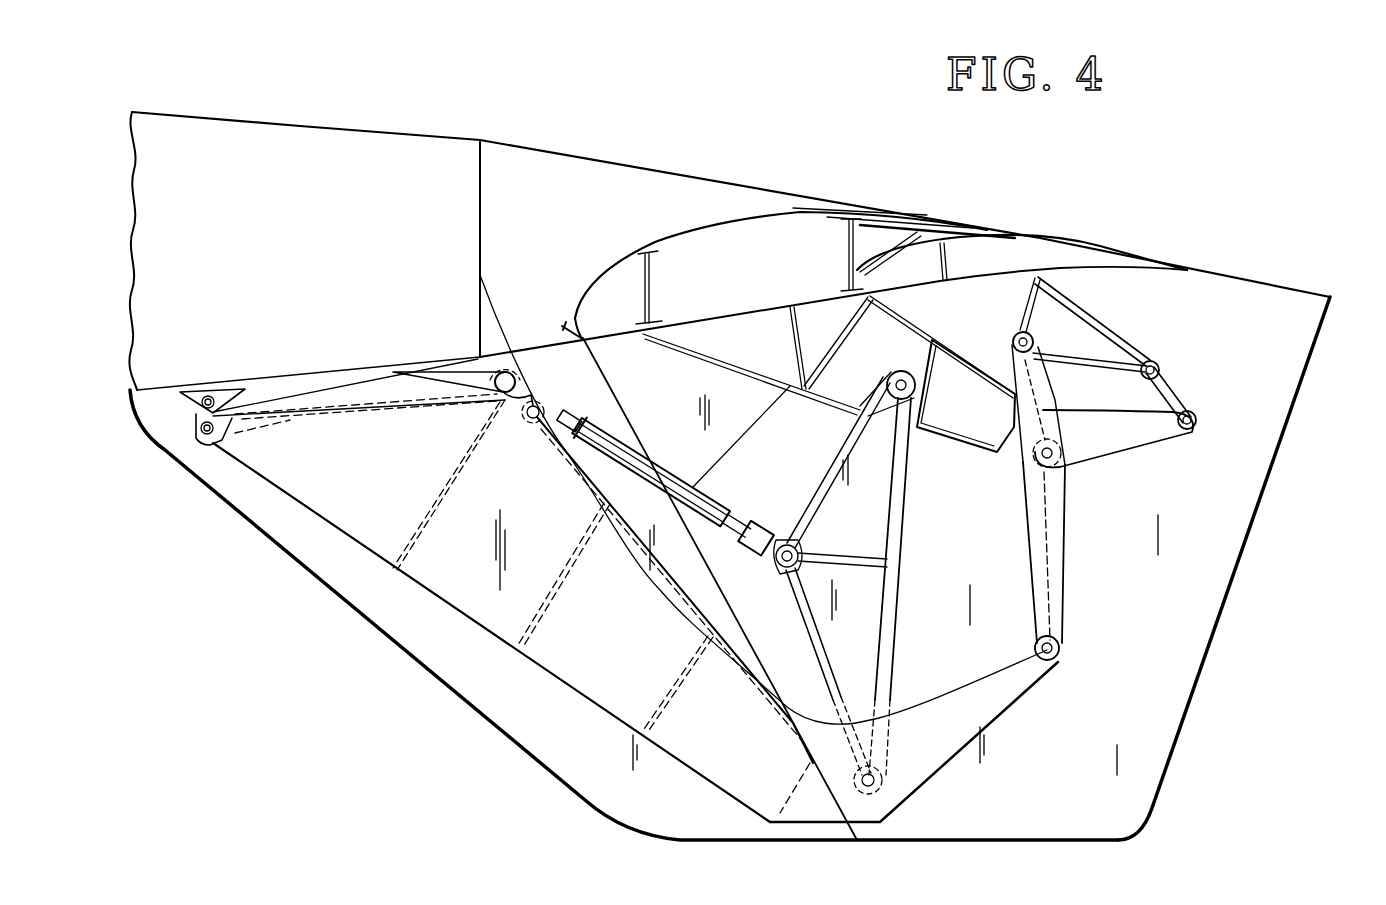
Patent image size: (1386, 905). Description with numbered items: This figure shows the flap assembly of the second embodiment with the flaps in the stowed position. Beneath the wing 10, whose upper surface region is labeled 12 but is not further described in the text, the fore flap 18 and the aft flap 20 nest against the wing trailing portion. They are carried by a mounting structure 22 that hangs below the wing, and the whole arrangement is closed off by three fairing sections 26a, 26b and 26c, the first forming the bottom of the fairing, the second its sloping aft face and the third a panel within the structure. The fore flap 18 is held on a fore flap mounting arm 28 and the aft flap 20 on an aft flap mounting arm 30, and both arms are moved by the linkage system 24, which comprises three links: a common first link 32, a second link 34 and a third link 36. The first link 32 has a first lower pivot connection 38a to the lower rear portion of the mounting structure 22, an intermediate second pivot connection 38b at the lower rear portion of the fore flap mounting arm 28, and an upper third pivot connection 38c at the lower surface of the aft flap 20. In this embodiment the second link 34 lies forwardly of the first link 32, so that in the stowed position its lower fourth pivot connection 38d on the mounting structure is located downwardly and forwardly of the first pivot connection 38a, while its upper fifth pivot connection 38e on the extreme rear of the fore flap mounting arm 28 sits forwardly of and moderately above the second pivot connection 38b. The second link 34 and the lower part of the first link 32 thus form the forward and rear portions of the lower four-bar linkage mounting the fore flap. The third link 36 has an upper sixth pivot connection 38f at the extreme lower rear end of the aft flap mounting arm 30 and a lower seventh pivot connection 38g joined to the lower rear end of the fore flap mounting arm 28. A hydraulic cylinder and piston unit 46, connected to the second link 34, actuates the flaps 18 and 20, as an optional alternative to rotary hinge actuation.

The wing 10 is at (398, 142).
The wing upper skin 12 is at (300, 128).
The fore flap 18 is at (710, 230).
The aft flap 20 is at (1047, 250).
The mounting structure 22 is at (602, 692).
The linkage system 24 is at (1070, 527).
The fairing section 26a is at (727, 840).
The fairing section 26b is at (1157, 752).
The fairing section 26c is at (733, 427).
The fore flap mounting arm 28 is at (950, 442).
The aft flap mounting arm 30 is at (1113, 326).
The common first link 32 is at (1057, 583).
The second link 34 is at (875, 612).
The third link 36 is at (1176, 390).
The first pivot connection 38a is at (1060, 648).
The second pivot connection 38b is at (1062, 462).
The third pivot connection 38c is at (1032, 337).
The fourth pivot connection 38d is at (887, 780).
The fifth pivot connection 38e is at (915, 390).
The sixth pivot connection 38f is at (1160, 364).
The seventh pivot connection 38g is at (1197, 418).
The hydraulic cylinder and piston unit 46 is at (668, 490).